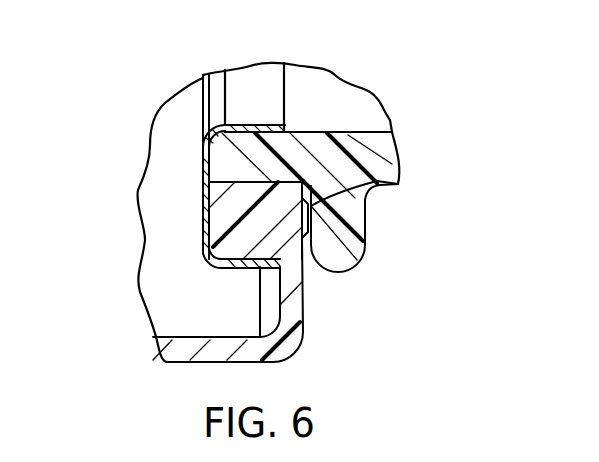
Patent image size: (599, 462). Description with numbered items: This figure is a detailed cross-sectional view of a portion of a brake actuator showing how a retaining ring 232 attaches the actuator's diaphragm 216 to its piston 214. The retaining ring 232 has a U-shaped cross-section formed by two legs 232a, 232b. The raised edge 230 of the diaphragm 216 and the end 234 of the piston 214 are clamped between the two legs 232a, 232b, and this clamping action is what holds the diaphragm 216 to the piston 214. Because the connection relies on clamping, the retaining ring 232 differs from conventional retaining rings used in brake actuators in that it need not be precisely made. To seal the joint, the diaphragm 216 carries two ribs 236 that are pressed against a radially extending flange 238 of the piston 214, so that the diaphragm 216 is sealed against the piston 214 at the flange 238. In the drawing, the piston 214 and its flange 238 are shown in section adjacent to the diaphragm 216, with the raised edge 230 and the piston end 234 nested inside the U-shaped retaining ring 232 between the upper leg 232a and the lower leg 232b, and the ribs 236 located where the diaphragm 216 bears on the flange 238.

The piston 214 is at (382, 163).
The diaphragm 216 is at (305, 333).
The raised edge 230 is at (222, 228).
The retaining ring 232 is at (203, 172).
The leg 232a is at (247, 125).
The leg 232b is at (237, 268).
The end of the piston 234 is at (203, 137).
The ribs 236 is at (367, 192).
The radially extending flange 238 is at (350, 252).